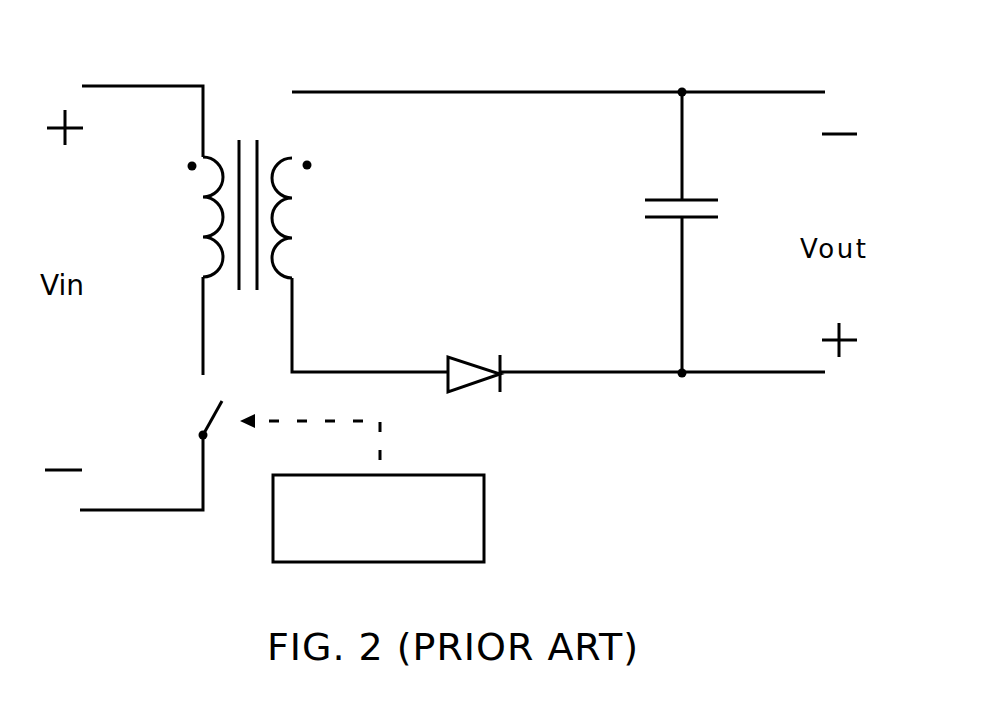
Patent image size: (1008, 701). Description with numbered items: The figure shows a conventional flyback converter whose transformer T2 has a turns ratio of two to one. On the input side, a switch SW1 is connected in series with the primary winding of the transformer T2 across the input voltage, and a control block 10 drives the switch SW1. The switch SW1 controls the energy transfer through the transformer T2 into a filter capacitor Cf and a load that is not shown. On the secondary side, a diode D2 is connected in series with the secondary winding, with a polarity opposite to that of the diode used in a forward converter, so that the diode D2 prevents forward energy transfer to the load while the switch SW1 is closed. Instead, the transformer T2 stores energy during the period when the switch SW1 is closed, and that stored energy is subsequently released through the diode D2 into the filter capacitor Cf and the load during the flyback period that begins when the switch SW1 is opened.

The control circuit 10 is at (485, 511).
The transformer T2 is at (243, 158).
The switch SW1 is at (176, 413).
The diode D2 is at (474, 351).
The filter capacitor Cf is at (654, 233).